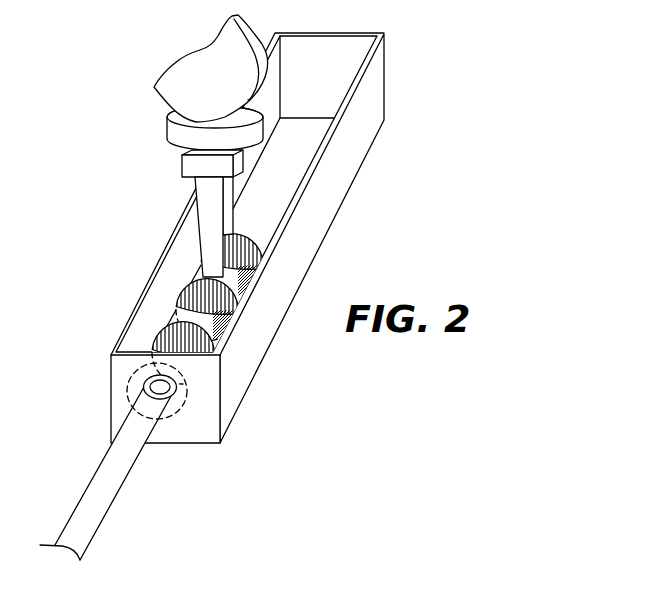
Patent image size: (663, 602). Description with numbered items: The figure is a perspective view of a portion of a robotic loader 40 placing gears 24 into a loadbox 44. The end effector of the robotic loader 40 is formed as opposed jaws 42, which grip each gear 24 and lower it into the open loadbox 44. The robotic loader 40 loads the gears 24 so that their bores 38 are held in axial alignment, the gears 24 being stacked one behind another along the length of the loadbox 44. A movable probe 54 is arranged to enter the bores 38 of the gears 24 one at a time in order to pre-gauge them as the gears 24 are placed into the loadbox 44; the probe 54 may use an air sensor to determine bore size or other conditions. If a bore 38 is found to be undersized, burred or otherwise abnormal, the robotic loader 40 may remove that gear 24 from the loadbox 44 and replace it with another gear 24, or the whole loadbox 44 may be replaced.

The gears 24 is at (150, 344).
The bores 38 is at (128, 394).
The robotic loader 40 is at (172, 92).
The opposed jaws 42 is at (205, 213).
The loadbox 44 is at (338, 175).
The movable probe 54 is at (111, 491).